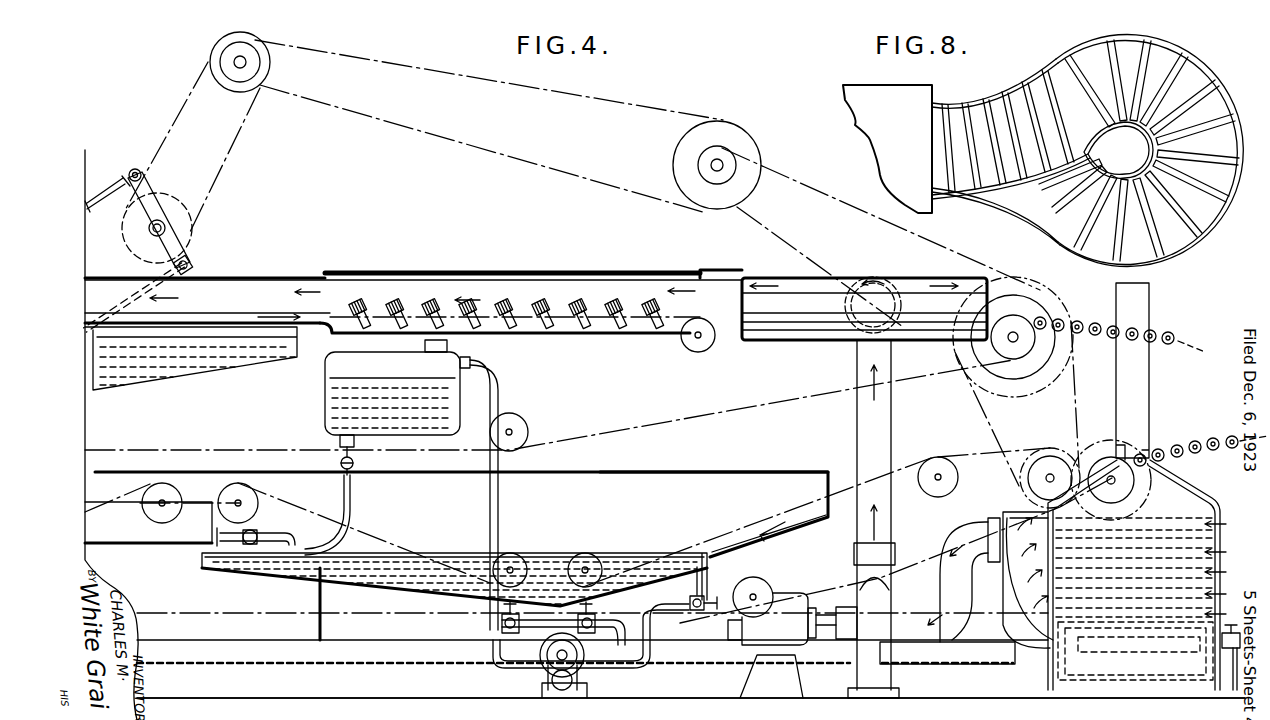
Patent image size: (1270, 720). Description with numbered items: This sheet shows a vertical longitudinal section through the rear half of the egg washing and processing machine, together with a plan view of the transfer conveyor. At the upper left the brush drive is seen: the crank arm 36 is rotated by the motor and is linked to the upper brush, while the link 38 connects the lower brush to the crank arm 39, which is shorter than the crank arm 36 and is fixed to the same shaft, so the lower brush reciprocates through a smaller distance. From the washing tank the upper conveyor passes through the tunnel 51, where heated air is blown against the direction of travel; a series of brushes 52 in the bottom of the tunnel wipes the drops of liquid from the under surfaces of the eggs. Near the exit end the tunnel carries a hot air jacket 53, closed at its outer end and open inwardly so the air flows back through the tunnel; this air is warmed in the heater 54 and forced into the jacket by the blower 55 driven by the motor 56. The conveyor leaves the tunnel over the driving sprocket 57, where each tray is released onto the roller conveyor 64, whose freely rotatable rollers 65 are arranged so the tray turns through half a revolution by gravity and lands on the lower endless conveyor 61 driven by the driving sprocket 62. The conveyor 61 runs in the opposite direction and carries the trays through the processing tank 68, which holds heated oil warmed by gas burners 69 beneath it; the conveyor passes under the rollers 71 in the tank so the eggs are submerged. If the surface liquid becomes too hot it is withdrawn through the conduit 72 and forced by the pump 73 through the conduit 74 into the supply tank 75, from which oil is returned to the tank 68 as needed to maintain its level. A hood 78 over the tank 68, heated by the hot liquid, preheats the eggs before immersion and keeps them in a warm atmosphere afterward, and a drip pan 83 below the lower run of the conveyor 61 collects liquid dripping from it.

In FIG. 4, the crank arm 36 is at (146, 186).
In FIG. 4, the link 38 is at (133, 301).
In FIG. 4, the crank arm 39 is at (175, 242).
In FIG. 4, the tunnel 51 is at (280, 279).
In FIG. 4, the brushes 52 is at (517, 307).
In FIG. 4, the hot air jacket 53 is at (943, 290).
In FIG. 4, the heater 54 is at (1020, 586).
In FIG. 4, the blower 55 is at (857, 600).
In FIG. 4, the motor 56 is at (785, 597).
In FIG. 4, the driving sprocket 57 is at (1022, 333).
In FIG. 4, the endless conveyor 61 is at (968, 462).
In FIG. 4, the driving sprocket 62 is at (1050, 455).
In FIG. 8, the roller conveyor 64 is at (975, 104).
In FIG. 8, the rollers 65 is at (1035, 85).
In FIG. 4, the processing tank 68 is at (287, 573).
In FIG. 4, the gas burners 69 is at (500, 624).
In FIG. 4, the rollers 71 is at (567, 550).
In FIG. 4, the conduit 72 is at (643, 670).
In FIG. 4, the pump 73 is at (552, 675).
In FIG. 4, the conduit 74 is at (497, 393).
In FIG. 4, the supply tank 75 is at (325, 376).
In FIG. 4, the hood 78 is at (650, 472).
In FIG. 4, the drip pan 83 is at (300, 655).